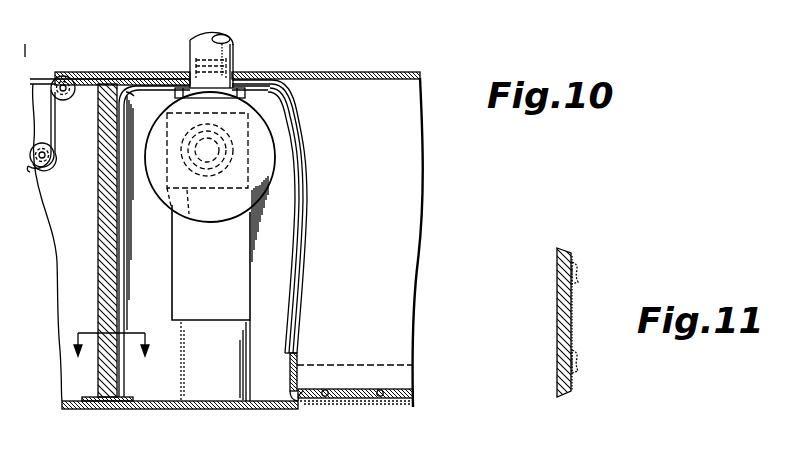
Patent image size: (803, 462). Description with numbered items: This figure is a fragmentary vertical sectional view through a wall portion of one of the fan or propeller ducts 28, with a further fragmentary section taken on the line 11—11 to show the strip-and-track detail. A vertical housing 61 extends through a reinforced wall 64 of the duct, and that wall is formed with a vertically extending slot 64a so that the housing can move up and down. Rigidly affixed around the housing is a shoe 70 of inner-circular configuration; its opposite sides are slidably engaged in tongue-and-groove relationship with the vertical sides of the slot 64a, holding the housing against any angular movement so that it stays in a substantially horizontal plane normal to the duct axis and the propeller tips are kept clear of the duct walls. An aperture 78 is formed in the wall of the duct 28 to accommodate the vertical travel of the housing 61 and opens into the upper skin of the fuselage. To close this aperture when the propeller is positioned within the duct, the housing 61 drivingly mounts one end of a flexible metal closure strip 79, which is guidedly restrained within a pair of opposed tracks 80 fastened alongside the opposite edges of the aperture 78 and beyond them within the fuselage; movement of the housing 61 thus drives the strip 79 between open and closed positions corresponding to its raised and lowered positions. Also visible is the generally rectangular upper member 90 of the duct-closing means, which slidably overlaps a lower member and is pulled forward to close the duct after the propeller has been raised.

In FIG. 10, the section line 11— 11 is at (113, 355).
In FIG. 10, the duct 28 is at (228, 243).
In FIG. 10, the housing 61 is at (188, 47).
In FIG. 10, the reinforced wall 64 is at (211, 303).
In FIG. 10, the vertically extending slot 64a is at (247, 253).
In FIG. 10, the shoe 70 is at (180, 224).
In FIG. 10, the aperture 78 is at (309, 208).
In FIG. 10, the flexible metal closure strip 79 is at (243, 78).
In FIG. 11, the flexible metal closure strip 79 is at (578, 319).
In FIG. 10, the tracks 80 is at (291, 84).
In FIG. 11, the tracks 80 is at (578, 276).
In FIG. 10, the upper member 90 is at (368, 72).